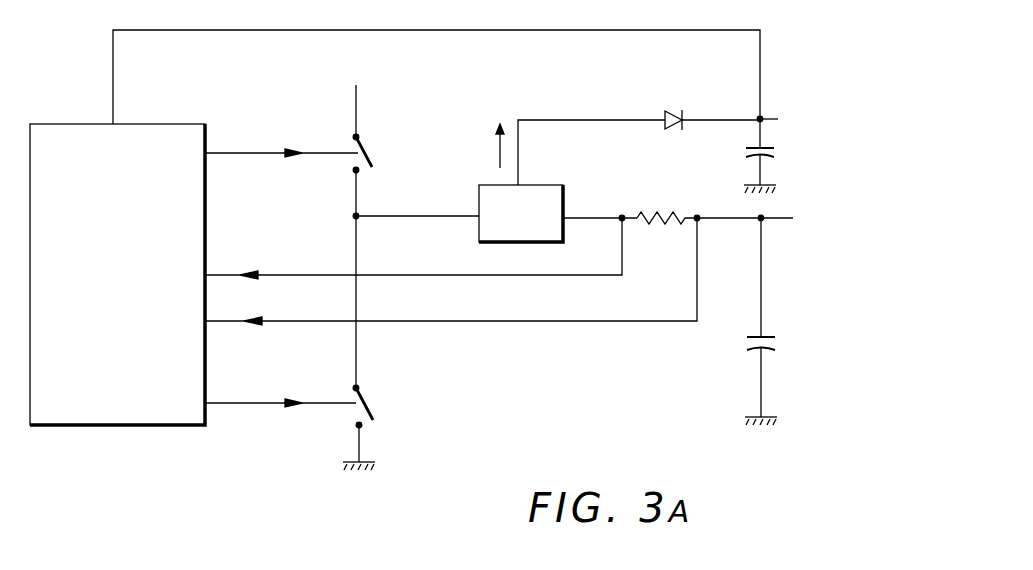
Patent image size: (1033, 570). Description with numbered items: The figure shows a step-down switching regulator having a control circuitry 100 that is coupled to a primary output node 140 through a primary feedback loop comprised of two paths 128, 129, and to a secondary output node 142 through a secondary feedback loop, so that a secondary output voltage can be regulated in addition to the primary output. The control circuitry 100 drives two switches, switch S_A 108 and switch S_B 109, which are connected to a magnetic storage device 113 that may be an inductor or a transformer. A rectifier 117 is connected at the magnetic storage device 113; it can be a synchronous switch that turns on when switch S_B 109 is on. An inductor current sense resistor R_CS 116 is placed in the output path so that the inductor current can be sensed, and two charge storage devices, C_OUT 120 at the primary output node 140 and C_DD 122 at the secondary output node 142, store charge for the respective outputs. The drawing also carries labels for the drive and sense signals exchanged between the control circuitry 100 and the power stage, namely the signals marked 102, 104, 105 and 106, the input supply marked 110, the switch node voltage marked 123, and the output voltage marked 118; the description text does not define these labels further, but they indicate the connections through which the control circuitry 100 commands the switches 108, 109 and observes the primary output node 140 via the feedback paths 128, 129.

The control circuitry 100 is at (117, 274).
The DH drive signal 102 is at (281, 145).
The DL drive signal 104 is at (280, 395).
The CS current sense signal 105 is at (280, 267).
The FB feedback signal 106 is at (280, 312).
The switch S_A 108 is at (396, 174).
The switch S_B 109 is at (398, 428).
The input voltage VIN 110 is at (385, 96).
The magnetic storage device 113 is at (521, 213).
The inductor current sense resistor R_CS 116 is at (707, 198).
The rectifier 117 is at (675, 108).
The output voltage VOUT 118 is at (788, 219).
The charge storage device C_OUT 120 is at (792, 379).
The charge storage device C_DD 122 is at (801, 154).
The switch node voltage VS 123 is at (615, 142).
The primary feedback loop element 128 is at (535, 279).
The primary feedback loop element 129 is at (595, 323).
The primary output node 140 is at (622, 215).
The secondary output node 142 is at (768, 113).